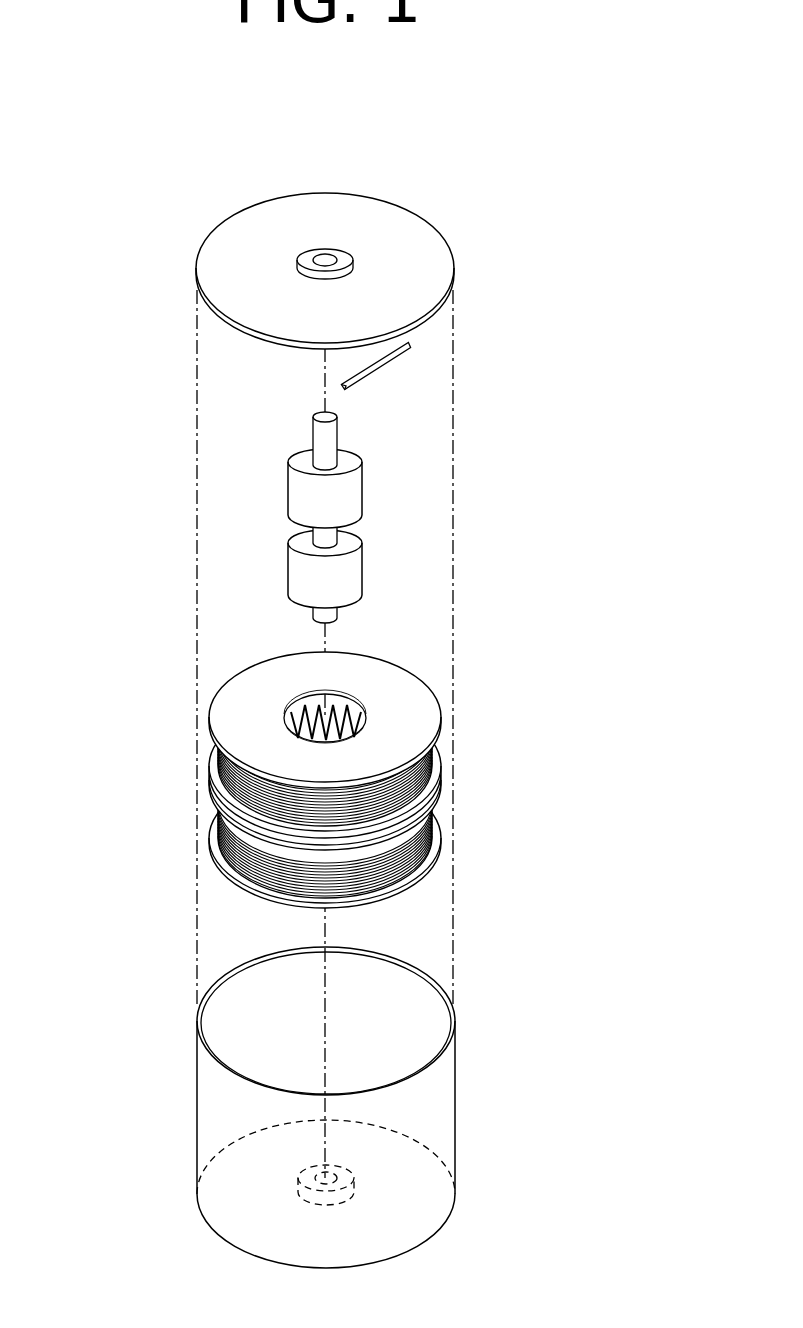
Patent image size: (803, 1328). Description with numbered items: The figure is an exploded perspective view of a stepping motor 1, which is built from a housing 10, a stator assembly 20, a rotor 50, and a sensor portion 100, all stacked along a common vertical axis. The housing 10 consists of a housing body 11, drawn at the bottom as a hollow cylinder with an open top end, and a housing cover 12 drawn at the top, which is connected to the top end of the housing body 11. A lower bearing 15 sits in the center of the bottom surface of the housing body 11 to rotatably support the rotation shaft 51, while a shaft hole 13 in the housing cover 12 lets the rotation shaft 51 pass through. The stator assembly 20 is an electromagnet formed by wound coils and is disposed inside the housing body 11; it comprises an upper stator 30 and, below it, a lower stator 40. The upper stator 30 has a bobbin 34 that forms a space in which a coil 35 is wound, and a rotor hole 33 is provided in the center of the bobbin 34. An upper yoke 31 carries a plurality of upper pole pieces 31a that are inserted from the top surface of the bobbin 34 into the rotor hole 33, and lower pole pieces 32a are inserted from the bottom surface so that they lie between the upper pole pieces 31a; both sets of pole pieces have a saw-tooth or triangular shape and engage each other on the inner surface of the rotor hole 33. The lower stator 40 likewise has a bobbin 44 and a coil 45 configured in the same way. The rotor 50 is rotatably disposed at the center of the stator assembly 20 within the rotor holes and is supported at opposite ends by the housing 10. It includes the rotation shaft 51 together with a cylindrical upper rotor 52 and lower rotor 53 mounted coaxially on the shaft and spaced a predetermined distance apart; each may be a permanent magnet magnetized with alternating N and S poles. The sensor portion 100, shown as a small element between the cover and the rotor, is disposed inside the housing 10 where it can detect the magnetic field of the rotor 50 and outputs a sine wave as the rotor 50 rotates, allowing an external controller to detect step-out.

The stepping motor 1 is at (578, 105).
The housing 10 is at (570, 310).
The housing body 11 is at (472, 1041).
The housing cover 12 is at (468, 281).
The shaft hole 13 is at (330, 259).
The lower bearing 15 is at (342, 1196).
The sensor portion 100 is at (392, 371).
The stator assembly 20 is at (95, 745).
The upper stator 30 is at (192, 735).
The upper yoke 31 is at (226, 692).
The upper pole pieces 31a is at (307, 710).
The lower pole pieces 32a is at (318, 731).
The rotor hole 33 is at (343, 700).
The bobbin 34 is at (225, 789).
The coil 35 is at (222, 761).
The lower stator 40 is at (195, 848).
The bobbin 44 is at (230, 868).
The coil 45 is at (238, 888).
The rotor 50 is at (148, 458).
The rotation shaft 51 is at (297, 424).
The upper rotor 52 is at (275, 492).
The lower rotor 53 is at (275, 571).